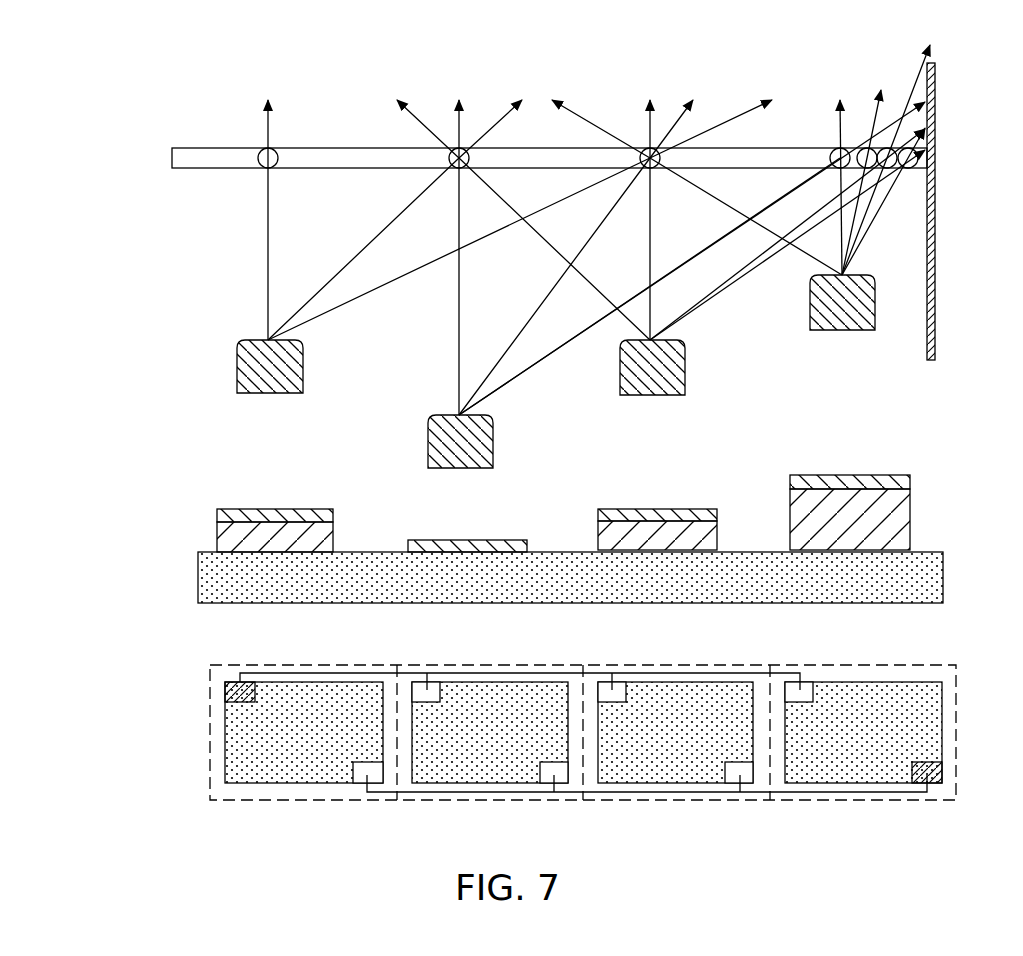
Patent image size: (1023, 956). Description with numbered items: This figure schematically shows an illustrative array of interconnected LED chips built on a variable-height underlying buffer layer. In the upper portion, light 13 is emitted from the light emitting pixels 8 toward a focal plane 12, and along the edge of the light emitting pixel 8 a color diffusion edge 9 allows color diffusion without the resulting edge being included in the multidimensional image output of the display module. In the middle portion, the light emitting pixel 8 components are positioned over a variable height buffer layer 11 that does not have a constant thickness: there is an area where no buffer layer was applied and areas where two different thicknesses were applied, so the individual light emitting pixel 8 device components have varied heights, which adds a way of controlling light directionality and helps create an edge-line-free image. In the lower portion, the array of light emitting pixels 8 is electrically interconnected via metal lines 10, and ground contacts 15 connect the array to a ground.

The light emitting pixel 8 is at (237, 375).
The color diffusion edge 9 is at (935, 158).
The metal line 10 is at (855, 800).
The variable height buffer layer 11 is at (217, 533).
The focal plane 12 is at (172, 160).
The light 13 is at (268, 258).
The ground contact 15 is at (232, 684).